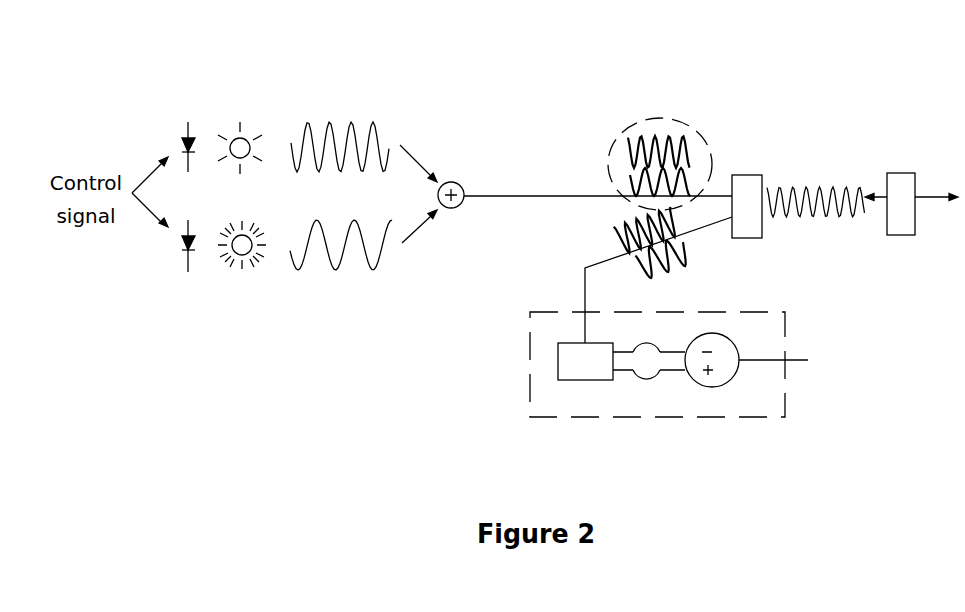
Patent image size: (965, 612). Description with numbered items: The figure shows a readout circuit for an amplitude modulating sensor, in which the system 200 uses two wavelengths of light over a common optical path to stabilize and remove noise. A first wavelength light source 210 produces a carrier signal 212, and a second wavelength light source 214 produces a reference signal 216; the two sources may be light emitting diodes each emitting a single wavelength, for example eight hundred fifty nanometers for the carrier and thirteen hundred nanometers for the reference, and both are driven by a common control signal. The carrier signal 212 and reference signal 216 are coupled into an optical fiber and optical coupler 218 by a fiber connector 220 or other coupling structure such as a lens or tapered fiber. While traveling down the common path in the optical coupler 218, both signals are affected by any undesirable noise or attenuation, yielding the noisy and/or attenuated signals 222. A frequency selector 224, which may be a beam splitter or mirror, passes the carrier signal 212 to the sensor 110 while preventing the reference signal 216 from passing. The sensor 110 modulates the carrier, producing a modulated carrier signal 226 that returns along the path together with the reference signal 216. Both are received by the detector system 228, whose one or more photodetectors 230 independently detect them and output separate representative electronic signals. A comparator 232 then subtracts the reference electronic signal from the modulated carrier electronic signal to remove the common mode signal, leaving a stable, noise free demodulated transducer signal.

The sensor 110 is at (898, 173).
The system 200 is at (566, 59).
The first wavelength light source 210 is at (189, 131).
The carrier signal 212 is at (327, 118).
The second wavelength light source 214 is at (185, 254).
The reference signal 216 is at (337, 267).
The optical coupler 218 is at (525, 197).
The fiber connector 220 is at (446, 182).
The noisy and/or attenuated signals 222 is at (650, 118).
The frequency selector 224 is at (755, 175).
The modulated carrier signal 226 is at (805, 187).
The detector system 228 is at (530, 372).
The photodetectors 230 is at (580, 380).
The comparator 232 is at (708, 387).